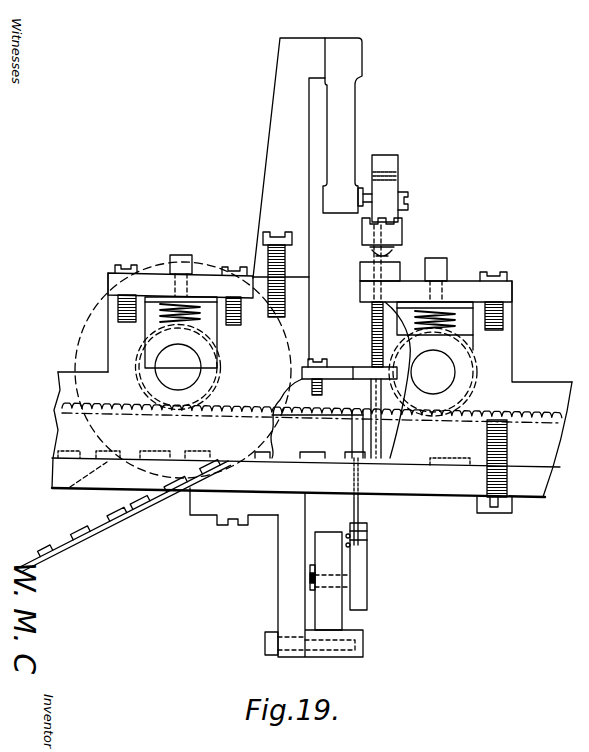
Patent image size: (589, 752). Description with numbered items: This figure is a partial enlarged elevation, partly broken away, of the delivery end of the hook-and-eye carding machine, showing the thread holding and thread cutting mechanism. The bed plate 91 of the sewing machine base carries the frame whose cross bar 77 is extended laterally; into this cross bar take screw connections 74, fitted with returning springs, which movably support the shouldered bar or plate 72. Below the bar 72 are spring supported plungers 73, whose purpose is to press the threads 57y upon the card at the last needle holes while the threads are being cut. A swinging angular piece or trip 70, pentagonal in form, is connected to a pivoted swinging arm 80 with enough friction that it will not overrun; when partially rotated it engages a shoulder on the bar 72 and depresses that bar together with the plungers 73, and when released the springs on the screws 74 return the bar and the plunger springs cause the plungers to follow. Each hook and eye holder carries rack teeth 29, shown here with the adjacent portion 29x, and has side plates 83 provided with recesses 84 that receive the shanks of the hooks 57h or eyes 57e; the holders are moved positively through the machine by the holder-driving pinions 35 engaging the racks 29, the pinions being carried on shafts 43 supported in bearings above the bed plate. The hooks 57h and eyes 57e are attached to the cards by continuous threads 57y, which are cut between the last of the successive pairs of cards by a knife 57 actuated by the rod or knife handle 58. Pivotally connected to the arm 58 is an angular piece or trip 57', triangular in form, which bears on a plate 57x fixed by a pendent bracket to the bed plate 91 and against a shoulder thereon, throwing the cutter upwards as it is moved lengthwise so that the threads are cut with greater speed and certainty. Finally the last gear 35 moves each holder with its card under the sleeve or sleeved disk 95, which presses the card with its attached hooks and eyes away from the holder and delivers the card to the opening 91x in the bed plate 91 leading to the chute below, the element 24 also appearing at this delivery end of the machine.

The pivoted swinging arm 80 is at (344, 123).
The swinging angular piece or trip 70 is at (393, 165).
The bar or plate 72 is at (400, 236).
The screw connections 74 is at (372, 330).
The cross bar 77 is at (341, 372).
The shafts 43 is at (433, 372).
The holder-driving pinions 35 is at (472, 350).
The rack teeth 29 is at (352, 409).
The rack extension 29x is at (296, 443).
The sleeve or sleeved disk 95 is at (80, 327).
The side plates 83 is at (280, 423).
The recesses 84 is at (292, 460).
The opening 91x is at (85, 488).
The bed plate 91 is at (533, 490).
The hooks 57h is at (33, 556).
The eyes 57e is at (80, 536).
The carriage 24 is at (88, 525).
The spring supported plungers 73 is at (371, 432).
The threads 57y is at (343, 468).
The knife 57 is at (372, 501).
The rod or knife handle 58 is at (366, 560).
The angular piece or trip 57' is at (354, 581).
The plate 57x is at (352, 653).